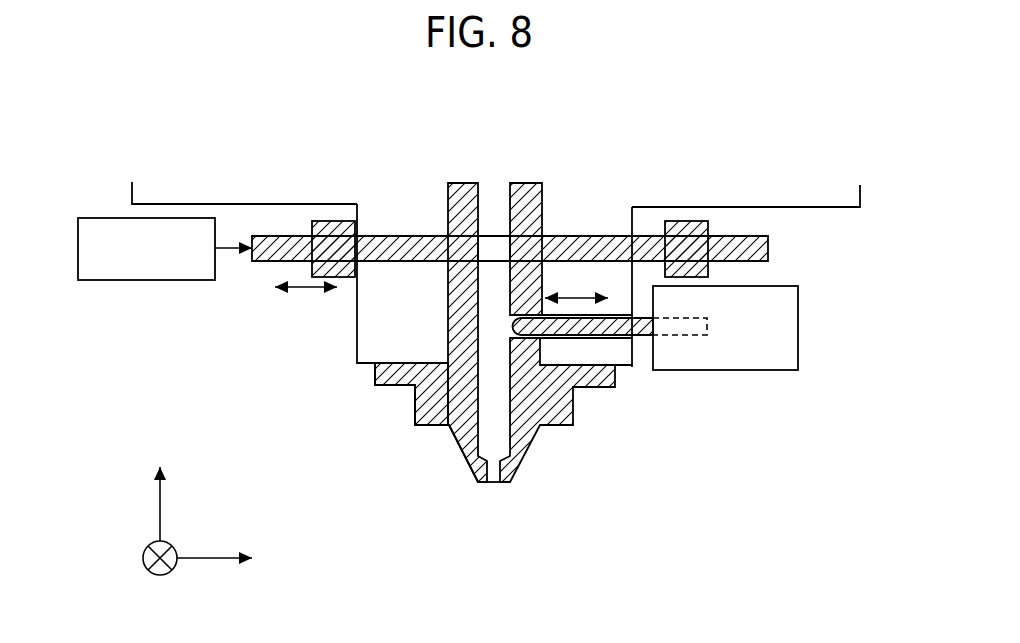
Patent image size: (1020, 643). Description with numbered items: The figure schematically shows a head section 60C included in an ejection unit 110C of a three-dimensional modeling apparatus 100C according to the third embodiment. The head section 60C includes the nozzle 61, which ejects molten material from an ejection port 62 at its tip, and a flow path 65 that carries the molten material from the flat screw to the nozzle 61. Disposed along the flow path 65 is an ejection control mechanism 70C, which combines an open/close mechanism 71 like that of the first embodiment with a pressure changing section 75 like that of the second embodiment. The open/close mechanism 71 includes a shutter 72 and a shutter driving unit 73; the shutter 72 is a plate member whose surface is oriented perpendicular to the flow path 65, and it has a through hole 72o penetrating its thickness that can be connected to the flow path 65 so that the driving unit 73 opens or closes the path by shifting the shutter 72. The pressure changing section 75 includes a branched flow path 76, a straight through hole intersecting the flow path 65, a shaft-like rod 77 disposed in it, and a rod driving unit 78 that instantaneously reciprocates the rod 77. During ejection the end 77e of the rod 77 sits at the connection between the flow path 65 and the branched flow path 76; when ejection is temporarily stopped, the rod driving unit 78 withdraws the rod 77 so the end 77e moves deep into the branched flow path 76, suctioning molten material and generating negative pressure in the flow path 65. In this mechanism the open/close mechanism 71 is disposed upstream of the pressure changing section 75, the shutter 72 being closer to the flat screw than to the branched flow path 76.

The three-dimensional modeling apparatus 100C is at (474, 341).
The ejection unit 110C is at (185, 110).
The head section 60C is at (642, 520).
The nozzle 61 is at (463, 445).
The ejection port 62 is at (492, 485).
The flow path 65 is at (503, 217).
The ejection control mechanism 70C is at (492, 351).
The open/close mechanism 71 is at (230, 338).
The shutter 72 is at (275, 262).
The through hole 72o is at (488, 263).
The shutter driving unit 73 is at (160, 283).
The pressure changing section 75 is at (762, 392).
The branched flow path 76 is at (648, 338).
The rod 77 is at (555, 340).
The end of the rod 77e is at (504, 337).
The rod driving unit 78 is at (798, 325).